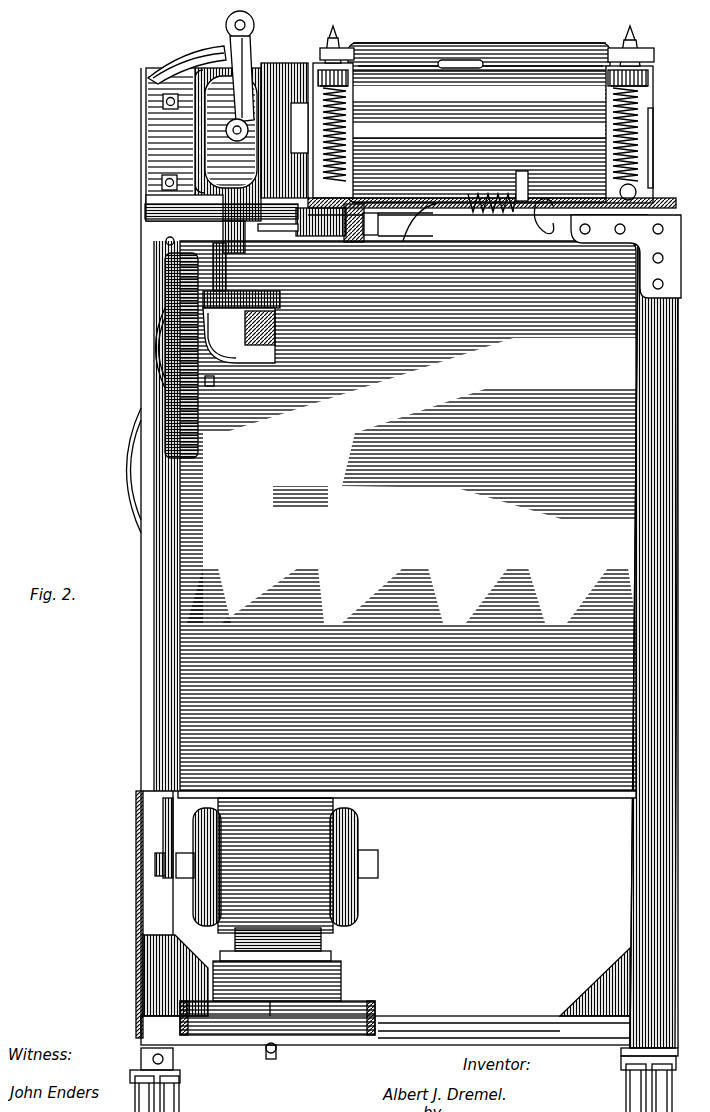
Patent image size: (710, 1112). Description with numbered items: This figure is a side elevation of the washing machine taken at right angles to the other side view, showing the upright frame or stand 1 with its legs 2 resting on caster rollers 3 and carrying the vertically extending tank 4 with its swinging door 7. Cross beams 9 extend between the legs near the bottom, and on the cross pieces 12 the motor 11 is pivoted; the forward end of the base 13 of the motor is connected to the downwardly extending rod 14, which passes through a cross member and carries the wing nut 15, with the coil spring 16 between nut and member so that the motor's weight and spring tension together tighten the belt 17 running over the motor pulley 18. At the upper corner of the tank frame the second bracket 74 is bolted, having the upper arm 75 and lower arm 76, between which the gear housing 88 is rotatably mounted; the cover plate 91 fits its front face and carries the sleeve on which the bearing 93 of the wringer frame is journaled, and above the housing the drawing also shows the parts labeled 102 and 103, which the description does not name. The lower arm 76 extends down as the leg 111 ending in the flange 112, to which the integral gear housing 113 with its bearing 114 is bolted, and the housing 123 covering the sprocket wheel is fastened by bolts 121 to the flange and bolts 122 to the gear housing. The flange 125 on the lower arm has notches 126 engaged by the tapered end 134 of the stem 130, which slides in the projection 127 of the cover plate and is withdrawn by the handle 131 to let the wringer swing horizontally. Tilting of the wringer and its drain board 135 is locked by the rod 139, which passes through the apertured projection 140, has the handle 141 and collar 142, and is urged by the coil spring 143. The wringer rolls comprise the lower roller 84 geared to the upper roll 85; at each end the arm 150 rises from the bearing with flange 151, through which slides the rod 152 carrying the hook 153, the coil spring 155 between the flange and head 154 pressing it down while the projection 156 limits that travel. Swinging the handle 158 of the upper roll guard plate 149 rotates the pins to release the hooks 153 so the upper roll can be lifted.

The upright frame or stand 1 is at (660, 645).
The legs 2 is at (133, 720).
The caster rollers 3 is at (172, 1085).
The tank 4 is at (407, 519).
The swinging door 7 is at (128, 803).
The cross beams 9 is at (172, 1010).
The motor 11 is at (277, 874).
The cross pieces 12 is at (348, 995).
The base of the motor 13 is at (277, 976).
The downwardly extending rod 14 is at (262, 1000).
The wing nut 15 is at (272, 1063).
The coil spring 16 is at (270, 1040).
The belt 17 is at (155, 820).
The motor pulley 18 is at (147, 856).
The second bracket 74 is at (148, 140).
The upper arm 75 is at (168, 55).
The lower arm 76 is at (180, 210).
The lower roller 84 is at (479, 131).
The upper roll 85 is at (479, 123).
The gear housing 88 is at (154, 168).
The cover plate 91 is at (280, 70).
The bearing 93 is at (290, 95).
The handle 102 is at (246, 20).
The gear 103 is at (226, 129).
The leg 111 is at (232, 267).
The flange 112 is at (272, 290).
The integral gear housing 113 is at (228, 350).
The bearing 114 is at (267, 320).
The bolts 121 is at (190, 270).
The bolts 122 is at (206, 376).
The housing 123 is at (165, 318).
The flange 125 is at (165, 228).
The notches 126 is at (239, 237).
The projection 127 is at (310, 228).
The stem 130 is at (346, 235).
The handle 131 is at (364, 225).
The tapered end 134 is at (268, 225).
The drain board 135 is at (415, 160).
The rod 139 is at (398, 240).
The apertured projection 140 is at (538, 225).
The handle 141 is at (560, 238).
The collar 142 is at (462, 205).
The coil spring 143 is at (645, 135).
The upper roll guard plate 149 is at (510, 36).
The arm 150 is at (640, 98).
The flange 151 is at (340, 72).
The rod 152 is at (338, 88).
The hook 153 is at (328, 30).
The head 154 is at (630, 184).
The coil spring 155 is at (338, 114).
The projection 156 is at (346, 44).
The handle 158 is at (455, 52).